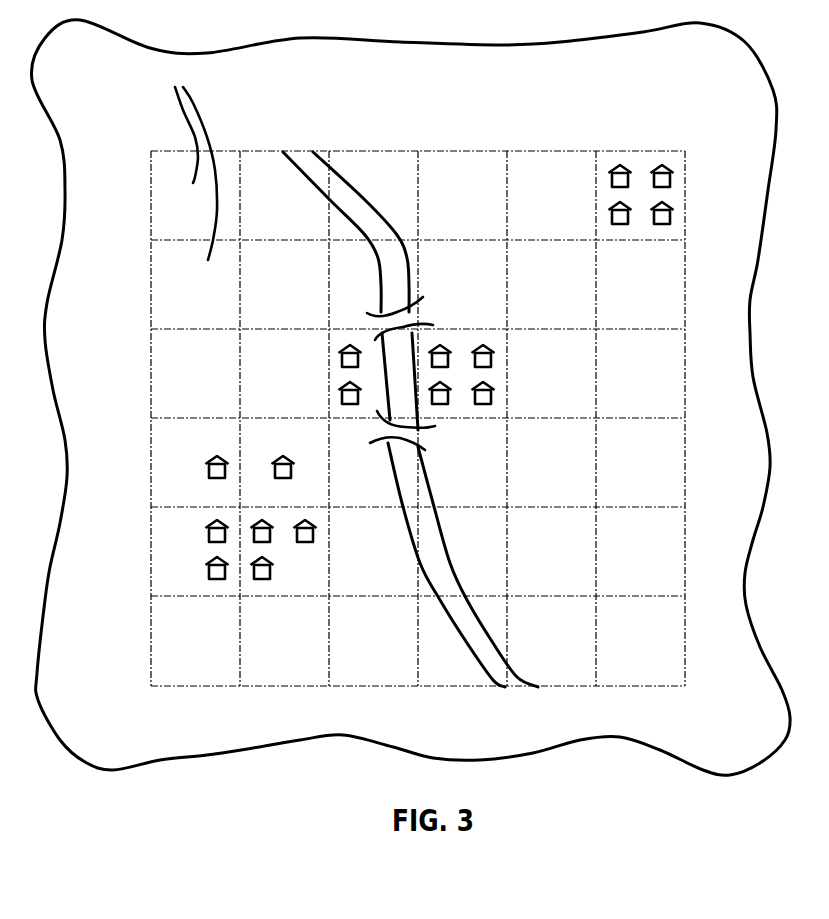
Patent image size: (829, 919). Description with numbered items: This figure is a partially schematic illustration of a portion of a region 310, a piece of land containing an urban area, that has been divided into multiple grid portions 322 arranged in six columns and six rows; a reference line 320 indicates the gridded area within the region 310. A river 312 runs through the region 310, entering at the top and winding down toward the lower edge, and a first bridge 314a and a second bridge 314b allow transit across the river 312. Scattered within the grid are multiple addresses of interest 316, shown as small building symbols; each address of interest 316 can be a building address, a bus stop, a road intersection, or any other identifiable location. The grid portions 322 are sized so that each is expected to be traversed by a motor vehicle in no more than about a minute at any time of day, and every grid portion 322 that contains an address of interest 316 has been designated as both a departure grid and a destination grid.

The region 310 is at (757, 493).
The river 312 is at (492, 656).
The first bridge 314a is at (388, 453).
The second bridge 314b is at (398, 303).
The address of interest 316 is at (662, 228).
The grid of cells 320 is at (685, 398).
The grid portion 322 is at (188, 164).